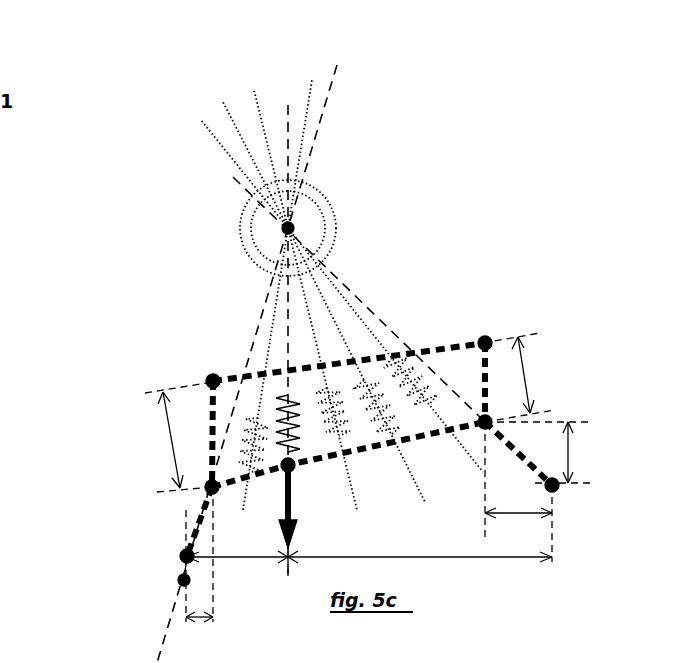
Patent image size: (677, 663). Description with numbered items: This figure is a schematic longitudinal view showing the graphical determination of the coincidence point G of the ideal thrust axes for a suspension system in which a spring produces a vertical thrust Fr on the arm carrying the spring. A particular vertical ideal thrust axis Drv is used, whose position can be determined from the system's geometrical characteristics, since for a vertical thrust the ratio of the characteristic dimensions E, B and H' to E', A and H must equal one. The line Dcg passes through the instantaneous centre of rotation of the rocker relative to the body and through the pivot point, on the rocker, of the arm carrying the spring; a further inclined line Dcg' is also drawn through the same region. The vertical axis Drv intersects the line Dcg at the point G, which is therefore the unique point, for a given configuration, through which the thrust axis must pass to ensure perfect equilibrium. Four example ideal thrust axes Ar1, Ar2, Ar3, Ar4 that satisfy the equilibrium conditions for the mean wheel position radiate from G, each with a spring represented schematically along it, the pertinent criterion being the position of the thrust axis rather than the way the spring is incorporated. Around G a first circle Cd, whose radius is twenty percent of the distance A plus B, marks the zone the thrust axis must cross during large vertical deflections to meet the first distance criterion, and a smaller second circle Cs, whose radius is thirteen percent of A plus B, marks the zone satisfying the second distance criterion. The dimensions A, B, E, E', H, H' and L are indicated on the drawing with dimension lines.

The coincidence point G is at (282, 226).
The second circle Cs is at (324, 226).
The first circle Cd is at (318, 188).
The inclined line through center of gravity Dcg' is at (297, 364).
The line Dcg is at (359, 299).
The vertical ideal thrust axis Drv is at (288, 302).
The ideal thrust axis Ar1 is at (268, 342).
The ideal thrust axis Ar2 is at (310, 294).
The ideal thrust axis Ar3 is at (328, 315).
The ideal thrust axis Ar4 is at (365, 331).
The spring thrust force Fr is at (324, 499).
The distance A is at (242, 547).
The distance B is at (420, 556).
The distance H is at (179, 437).
The distance H' is at (519, 377).
The length L is at (537, 452).
The distance E is at (199, 565).
The distance E' is at (518, 492).